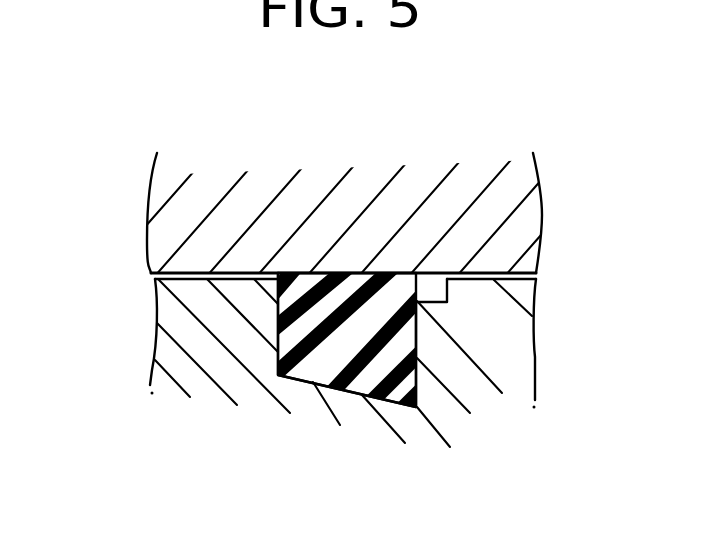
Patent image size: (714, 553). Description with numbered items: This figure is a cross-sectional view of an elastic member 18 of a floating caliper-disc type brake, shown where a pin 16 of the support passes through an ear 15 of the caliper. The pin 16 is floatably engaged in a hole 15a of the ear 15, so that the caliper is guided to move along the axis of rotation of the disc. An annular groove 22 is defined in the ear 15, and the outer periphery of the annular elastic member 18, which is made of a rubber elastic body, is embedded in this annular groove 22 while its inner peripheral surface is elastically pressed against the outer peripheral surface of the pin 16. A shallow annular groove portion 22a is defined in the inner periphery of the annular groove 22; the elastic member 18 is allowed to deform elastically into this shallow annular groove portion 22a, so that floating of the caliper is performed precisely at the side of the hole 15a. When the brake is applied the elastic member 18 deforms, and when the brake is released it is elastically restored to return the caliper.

The ear 15 is at (513, 333).
The hole 15a is at (186, 278).
The pin 16 is at (518, 227).
The elastic member 18 is at (315, 372).
The annular groove 22 is at (417, 367).
The shallow annular groove portion 22a is at (449, 281).